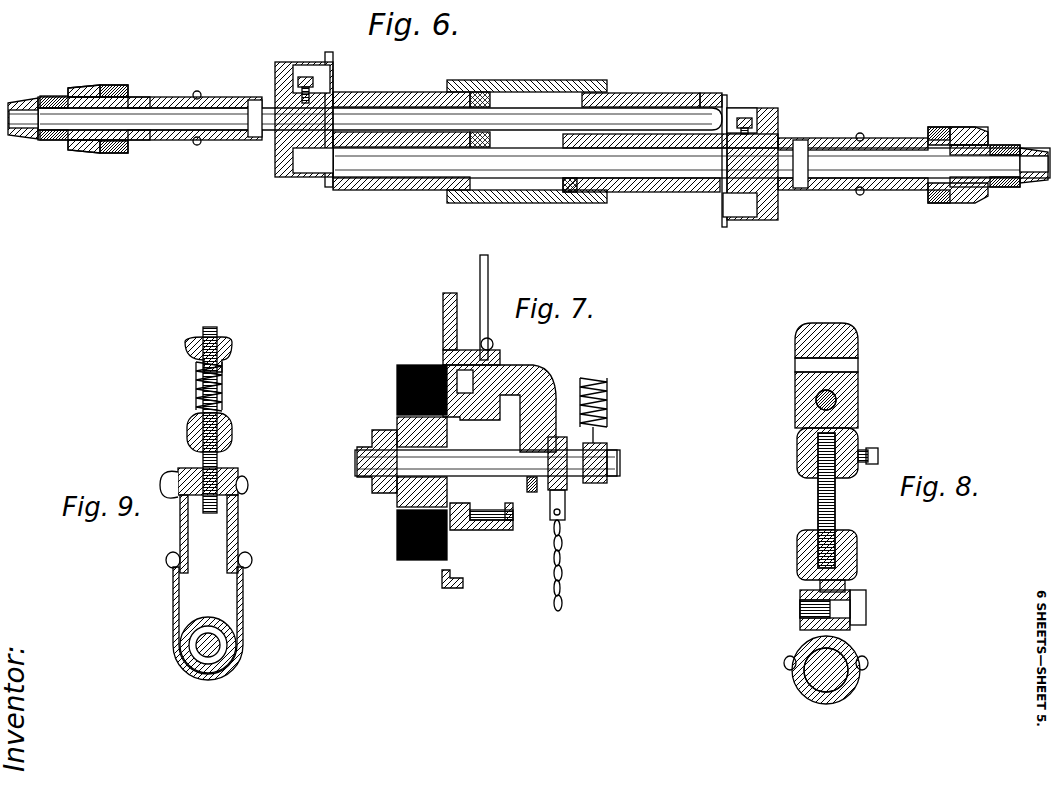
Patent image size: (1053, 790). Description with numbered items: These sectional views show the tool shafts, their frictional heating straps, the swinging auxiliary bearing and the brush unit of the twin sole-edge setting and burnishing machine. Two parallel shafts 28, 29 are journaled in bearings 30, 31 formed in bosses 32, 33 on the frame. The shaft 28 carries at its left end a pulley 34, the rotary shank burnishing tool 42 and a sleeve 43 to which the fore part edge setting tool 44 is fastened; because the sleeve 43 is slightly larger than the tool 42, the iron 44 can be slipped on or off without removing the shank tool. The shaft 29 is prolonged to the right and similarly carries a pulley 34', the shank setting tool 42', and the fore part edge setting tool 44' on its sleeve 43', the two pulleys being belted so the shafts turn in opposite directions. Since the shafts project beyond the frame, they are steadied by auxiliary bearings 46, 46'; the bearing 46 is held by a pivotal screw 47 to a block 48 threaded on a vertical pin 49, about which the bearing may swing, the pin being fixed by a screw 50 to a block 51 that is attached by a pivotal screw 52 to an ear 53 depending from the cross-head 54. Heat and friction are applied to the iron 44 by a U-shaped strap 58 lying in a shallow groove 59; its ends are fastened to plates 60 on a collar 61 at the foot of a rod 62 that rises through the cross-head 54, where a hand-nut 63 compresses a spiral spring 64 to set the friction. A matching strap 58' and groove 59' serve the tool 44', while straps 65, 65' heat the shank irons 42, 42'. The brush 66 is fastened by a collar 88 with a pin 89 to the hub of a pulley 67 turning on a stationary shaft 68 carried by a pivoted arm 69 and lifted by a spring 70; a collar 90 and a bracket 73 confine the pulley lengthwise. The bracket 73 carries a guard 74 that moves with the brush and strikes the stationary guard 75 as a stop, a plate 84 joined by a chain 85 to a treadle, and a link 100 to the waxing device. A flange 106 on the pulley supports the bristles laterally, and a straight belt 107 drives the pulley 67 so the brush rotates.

In FIG. 6, the shaft 28 is at (672, 118).
In FIG. 9, the shaft 28 is at (190, 664).
In FIG. 8, the shaft 28 is at (820, 700).
In FIG. 6, the shaft 29 is at (672, 168).
In FIG. 6, the bearings 30 is at (418, 92).
In FIG. 6, the bearings 31 is at (392, 191).
In FIG. 6, the boss 32 is at (368, 92).
In FIG. 6, the boss 33 is at (708, 97).
In FIG. 6, the pulley 34 is at (304, 144).
In FIG. 6, the pulley 34' is at (750, 178).
In FIG. 6, the rotary shank burnishing tool 42 is at (25, 137).
In FIG. 6, the shank setting tool 42' is at (1025, 199).
In FIG. 6, the sleeve 43 is at (94, 150).
In FIG. 9, the sleeve 43 is at (227, 663).
In FIG. 6, the sleeve 43' is at (985, 145).
In FIG. 6, the fore part edge setting tool 44 is at (110, 101).
In FIG. 9, the fore part edge setting tool 44 is at (181, 645).
In FIG. 6, the fore part edge setting tool 44' is at (958, 188).
In FIG. 6, the auxiliary bearing 46 is at (195, 142).
In FIG. 8, the auxiliary bearing 46 is at (841, 670).
In FIG. 6, the auxiliary bearing 46' is at (853, 191).
In FIG. 8, the pivotal screw 47 is at (802, 612).
In FIG. 8, the block 48 is at (858, 575).
In FIG. 8, the vertical pin 49 is at (836, 520).
In FIG. 8, the screw 50 is at (879, 456).
In FIG. 8, the block 51 is at (862, 448).
In FIG. 8, the pivotal screw 52 is at (838, 400).
In FIG. 8, the ear 53 is at (858, 372).
In FIG. 9, the cross-head 54 is at (190, 437).
In FIG. 8, the cross-head 54 is at (860, 338).
In FIG. 6, the strap 58 is at (121, 151).
In FIG. 9, the strap 58 is at (224, 623).
In FIG. 6, the strap 58' is at (916, 144).
In FIG. 6, the groove 59 is at (88, 140).
In FIG. 6, the groove 59' is at (960, 115).
In FIG. 9, the plates 60 is at (180, 535).
In FIG. 9, the collar 61 is at (228, 470).
In FIG. 9, the rod 62 is at (218, 432).
In FIG. 9, the hand-nut 63 is at (233, 350).
In FIG. 9, the spiral spring 64 is at (196, 392).
In FIG. 6, the strap 65 is at (52, 94).
In FIG. 6, the strap 65' is at (1018, 153).
In FIG. 7, the brush 66 is at (415, 561).
In FIG. 7, the pulley 67 is at (513, 531).
In FIG. 7, the stationary shaft 68 is at (382, 492).
In FIG. 7, the arm 69 is at (606, 448).
In FIG. 7, the spring 70 is at (608, 385).
In FIG. 7, the bracket 73 is at (540, 393).
In FIG. 7, the guard 74 is at (440, 355).
In FIG. 7, the stationary guard 75 is at (453, 293).
In FIG. 7, the plate 84 is at (566, 505).
In FIG. 7, the chain 85 is at (565, 583).
In FIG. 7, the collar 88 is at (385, 438).
In FIG. 7, the pin 89 is at (398, 432).
In FIG. 7, the collar 90 is at (358, 478).
In FIG. 7, the link 100 is at (489, 286).
In FIG. 7, the flange 106 is at (470, 385).
In FIG. 7, the straight belt 107 is at (492, 531).